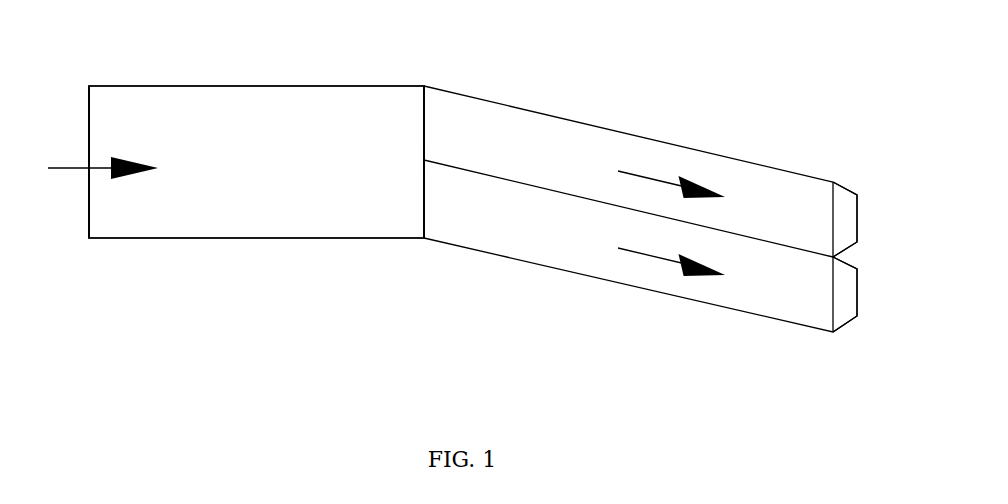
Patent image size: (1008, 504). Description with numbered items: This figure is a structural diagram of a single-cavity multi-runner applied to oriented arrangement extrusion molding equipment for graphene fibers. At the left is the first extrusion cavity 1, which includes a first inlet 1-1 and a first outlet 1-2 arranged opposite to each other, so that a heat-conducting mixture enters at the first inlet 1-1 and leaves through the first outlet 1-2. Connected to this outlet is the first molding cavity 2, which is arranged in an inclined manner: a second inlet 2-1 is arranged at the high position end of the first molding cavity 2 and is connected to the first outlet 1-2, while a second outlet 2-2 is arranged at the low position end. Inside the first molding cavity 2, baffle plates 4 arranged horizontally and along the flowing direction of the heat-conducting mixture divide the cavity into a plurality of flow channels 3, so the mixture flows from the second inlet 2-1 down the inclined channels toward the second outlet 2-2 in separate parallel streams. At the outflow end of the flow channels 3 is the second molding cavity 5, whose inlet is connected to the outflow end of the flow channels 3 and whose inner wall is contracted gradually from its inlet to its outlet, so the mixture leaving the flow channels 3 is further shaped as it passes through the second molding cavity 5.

The first extrusion cavity 1 is at (257, 86).
The first inlet 1-1 is at (89, 112).
The first outlet 1-2 is at (424, 128).
The first molding cavity 2 is at (614, 128).
The second inlet 2-1 is at (424, 148).
The second outlet 2-2 is at (833, 200).
The flow channels 3 is at (534, 223).
The baffle plates 4 is at (667, 217).
The second molding cavity 5 is at (857, 297).